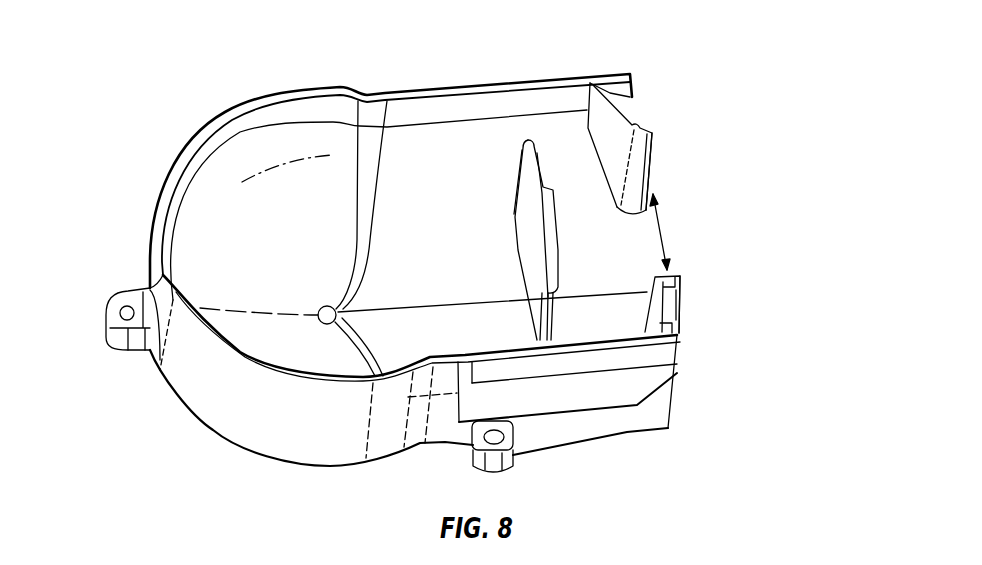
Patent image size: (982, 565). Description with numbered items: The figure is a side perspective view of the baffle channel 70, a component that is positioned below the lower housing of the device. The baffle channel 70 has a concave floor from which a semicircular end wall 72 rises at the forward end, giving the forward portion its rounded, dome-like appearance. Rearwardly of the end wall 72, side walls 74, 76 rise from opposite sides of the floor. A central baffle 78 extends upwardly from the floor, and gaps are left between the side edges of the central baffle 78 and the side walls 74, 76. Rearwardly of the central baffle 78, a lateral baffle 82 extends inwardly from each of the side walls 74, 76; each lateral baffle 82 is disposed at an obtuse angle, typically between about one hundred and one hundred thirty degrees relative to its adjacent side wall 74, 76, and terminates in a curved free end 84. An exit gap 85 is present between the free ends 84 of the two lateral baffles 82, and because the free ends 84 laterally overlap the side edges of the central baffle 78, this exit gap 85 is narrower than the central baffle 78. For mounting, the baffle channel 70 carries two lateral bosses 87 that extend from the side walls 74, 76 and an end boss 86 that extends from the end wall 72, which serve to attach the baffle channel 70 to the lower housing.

The baffle channel 70 is at (434, 267).
The semicircular end wall 72 is at (240, 350).
The side wall 74 is at (583, 82).
The side wall 76 is at (606, 392).
The central baffle 78 is at (522, 175).
The lateral baffle 82 is at (615, 138).
The curved free end 84 is at (647, 173).
The exit gap 85 is at (662, 234).
The end boss 86 is at (110, 327).
The lateral boss 87 is at (513, 458).